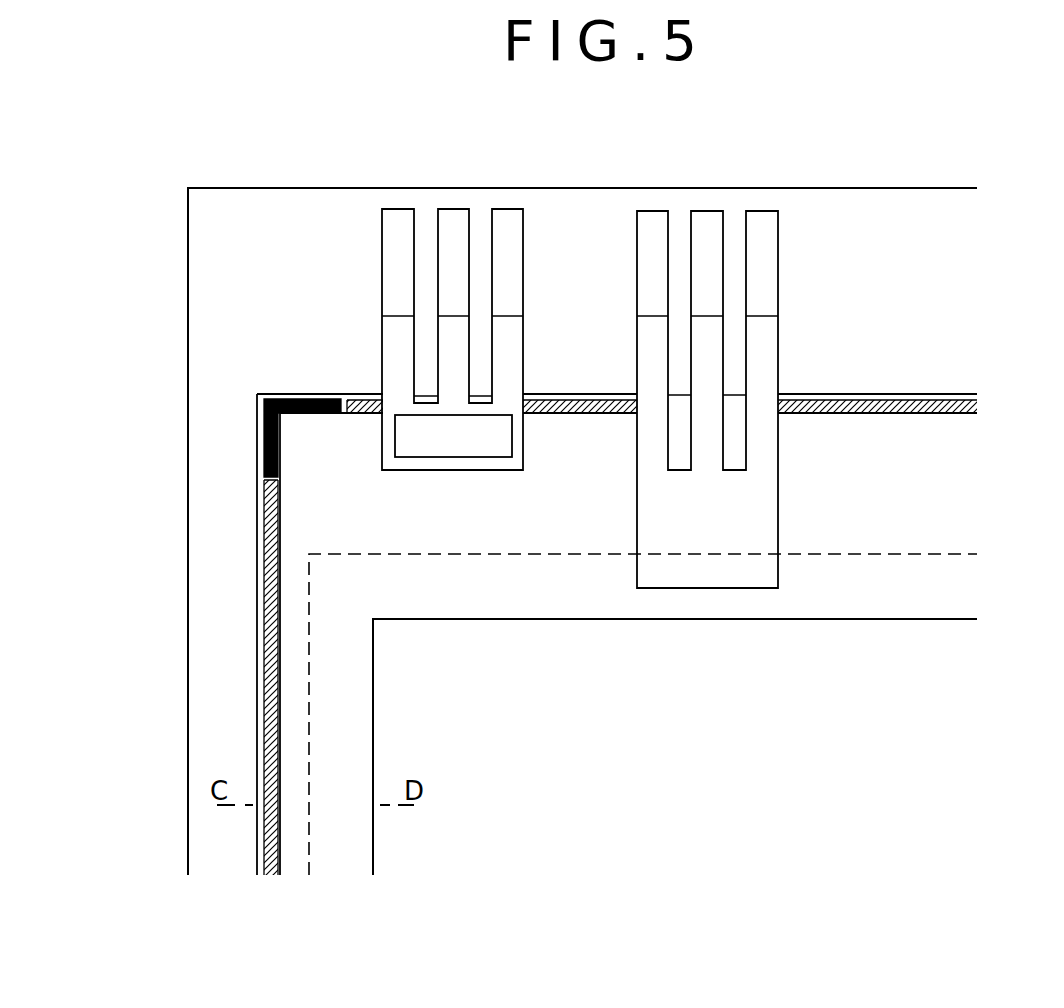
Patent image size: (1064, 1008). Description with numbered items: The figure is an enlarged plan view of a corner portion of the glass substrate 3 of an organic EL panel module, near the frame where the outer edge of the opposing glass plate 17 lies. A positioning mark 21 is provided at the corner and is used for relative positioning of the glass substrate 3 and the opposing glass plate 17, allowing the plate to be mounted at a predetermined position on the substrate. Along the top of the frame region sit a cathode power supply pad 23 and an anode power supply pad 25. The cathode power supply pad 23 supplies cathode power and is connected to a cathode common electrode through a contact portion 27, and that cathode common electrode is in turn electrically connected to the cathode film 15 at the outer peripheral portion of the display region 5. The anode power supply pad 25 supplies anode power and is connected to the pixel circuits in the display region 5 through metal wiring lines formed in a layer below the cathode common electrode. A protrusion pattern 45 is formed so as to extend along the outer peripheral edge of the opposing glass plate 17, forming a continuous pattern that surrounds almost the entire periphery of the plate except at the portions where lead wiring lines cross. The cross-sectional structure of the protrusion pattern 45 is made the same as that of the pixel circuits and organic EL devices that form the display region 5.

The glass substrate 3 is at (928, 270).
The opposing glass plate 17 is at (928, 470).
The cathode film 15 is at (928, 594).
The display region 5 is at (928, 738).
The positioning mark 21 is at (263, 437).
The cathode power supply pad 23 is at (535, 177).
The anode power supply pad 25 is at (788, 177).
The contact portion 27 is at (430, 443).
The protrusion pattern 45 is at (263, 648).